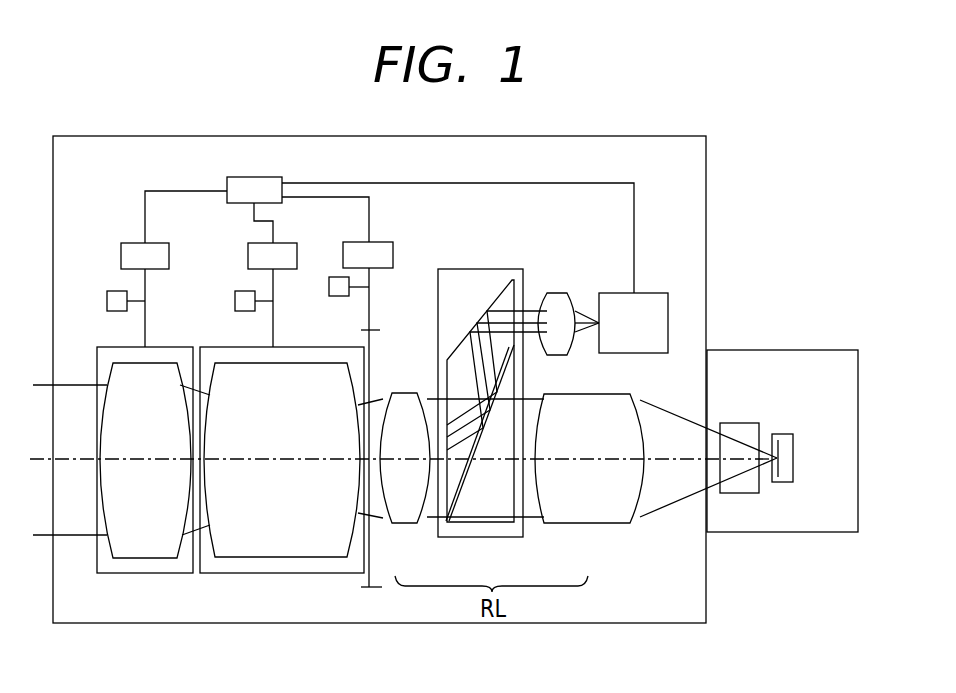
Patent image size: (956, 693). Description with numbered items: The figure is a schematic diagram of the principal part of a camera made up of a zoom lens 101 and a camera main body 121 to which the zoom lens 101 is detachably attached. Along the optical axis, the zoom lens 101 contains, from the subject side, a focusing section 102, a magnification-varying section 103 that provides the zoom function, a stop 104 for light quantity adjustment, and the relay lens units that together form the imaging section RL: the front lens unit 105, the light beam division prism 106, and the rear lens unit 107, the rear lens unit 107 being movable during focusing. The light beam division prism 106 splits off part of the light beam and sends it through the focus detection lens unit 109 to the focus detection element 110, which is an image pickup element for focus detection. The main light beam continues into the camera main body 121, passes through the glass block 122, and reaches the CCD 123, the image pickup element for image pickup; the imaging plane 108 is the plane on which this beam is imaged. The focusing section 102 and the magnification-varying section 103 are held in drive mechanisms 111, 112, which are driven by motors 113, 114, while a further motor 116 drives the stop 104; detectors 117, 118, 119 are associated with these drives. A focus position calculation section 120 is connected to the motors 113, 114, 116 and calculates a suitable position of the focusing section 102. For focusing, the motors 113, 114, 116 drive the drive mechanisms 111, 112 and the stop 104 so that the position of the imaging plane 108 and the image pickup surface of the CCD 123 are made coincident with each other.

The zoom lens 101 is at (342, 624).
The focusing section 102 is at (164, 360).
The magnification-varying section 103 is at (331, 360).
The stop 104 is at (380, 538).
The front lens unit 105 is at (412, 531).
The light beam division prism 106 is at (481, 538).
The rear lens unit 107 is at (562, 524).
The imaging plane 108 is at (793, 445).
The focus detection lens unit 109 is at (556, 292).
The focus detection element 110 is at (650, 292).
The drive mechanism 111 is at (148, 574).
The drive mechanism 112 is at (283, 574).
The motor 113 is at (158, 242).
The motor 114 is at (284, 242).
The motor 116 is at (384, 241).
The detector 117 is at (106, 298).
The detector 118 is at (234, 298).
The detector 119 is at (328, 287).
The focus position calculation section 120 is at (227, 181).
The camera main body 121 is at (780, 349).
The glass block 122 is at (740, 422).
The CCD 123 is at (784, 433).